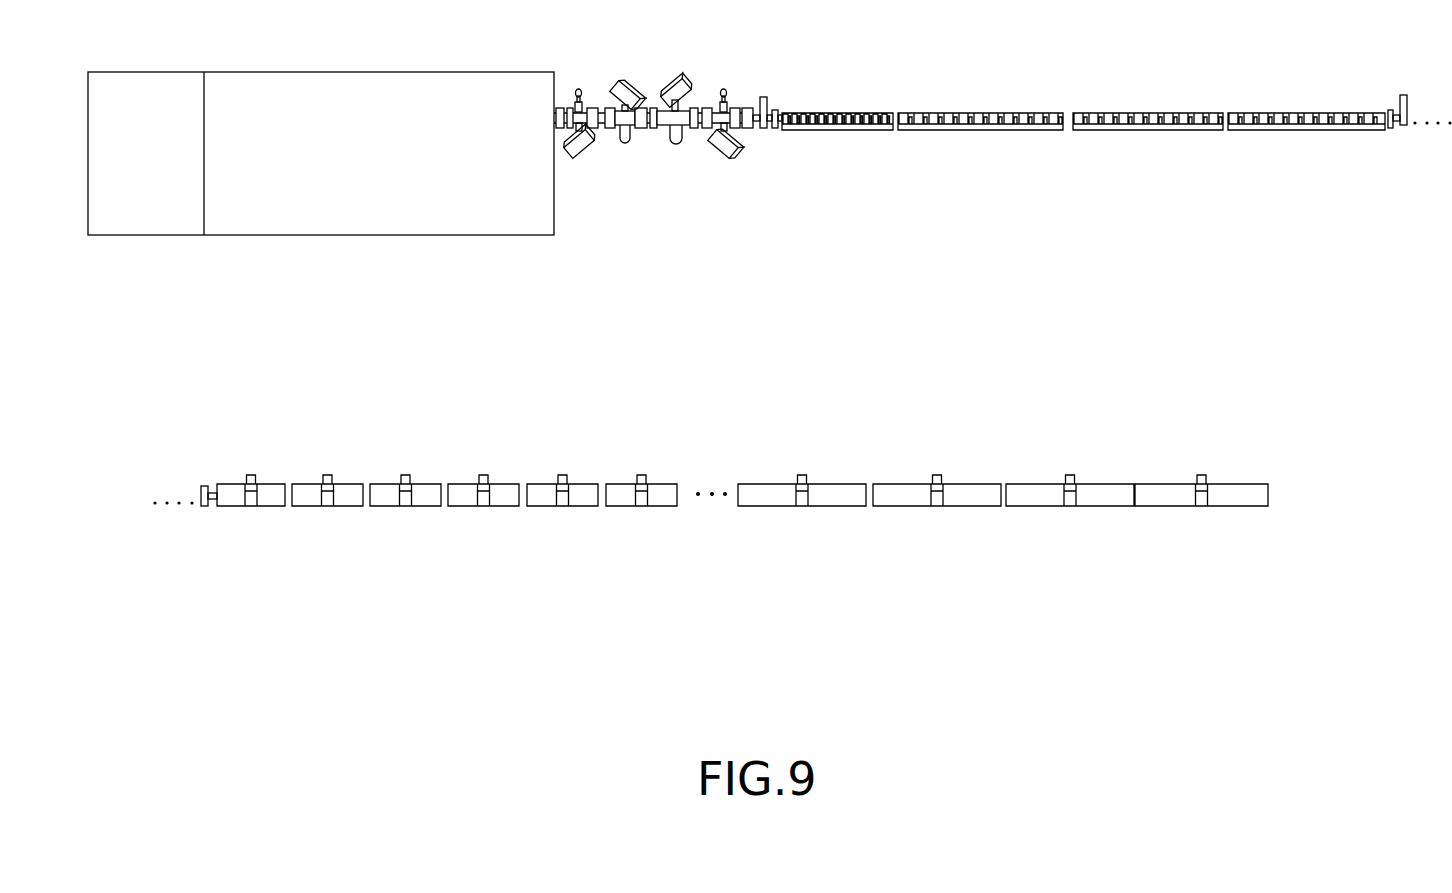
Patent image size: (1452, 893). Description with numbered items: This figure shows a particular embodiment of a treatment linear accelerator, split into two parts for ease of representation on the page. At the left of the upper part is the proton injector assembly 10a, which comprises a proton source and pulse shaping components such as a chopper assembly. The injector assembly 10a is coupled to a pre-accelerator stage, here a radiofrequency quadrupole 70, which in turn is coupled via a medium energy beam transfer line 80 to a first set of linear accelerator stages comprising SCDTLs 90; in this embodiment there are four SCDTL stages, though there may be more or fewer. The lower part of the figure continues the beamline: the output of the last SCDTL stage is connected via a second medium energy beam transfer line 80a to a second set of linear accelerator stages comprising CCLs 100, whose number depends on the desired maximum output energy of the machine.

The proton injector assembly 10a is at (321, 132).
The radiofrequency quadrupole 70 is at (653, 95).
The medium energy beam transfer line 80 is at (763, 140).
The SCDTL stages 90 is at (782, 97).
The CCL stages 100 is at (220, 437).
The second medium energy beam transfer line 80a is at (204, 518).